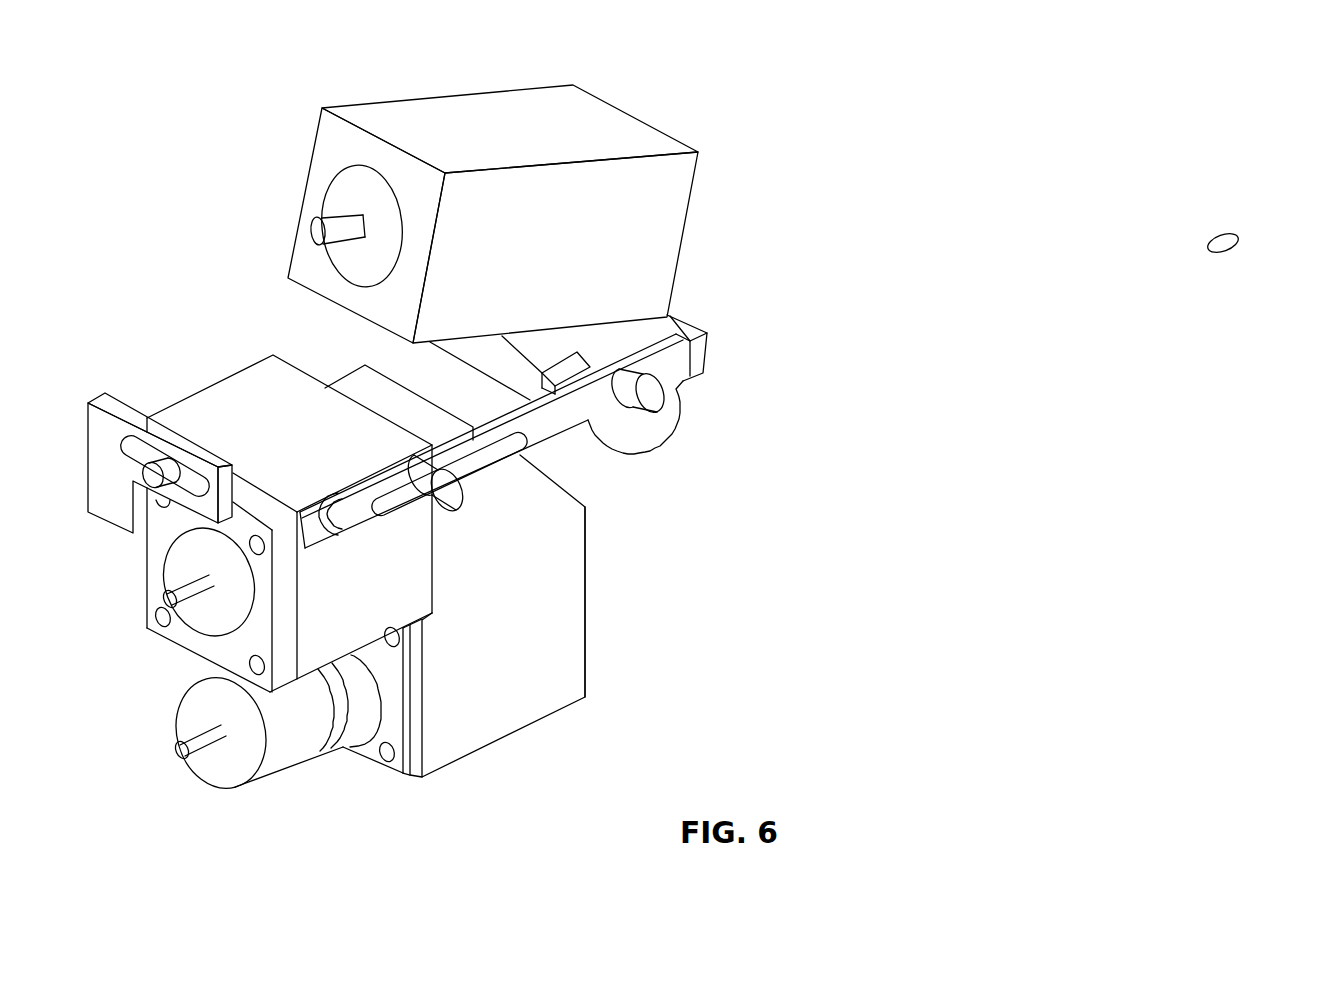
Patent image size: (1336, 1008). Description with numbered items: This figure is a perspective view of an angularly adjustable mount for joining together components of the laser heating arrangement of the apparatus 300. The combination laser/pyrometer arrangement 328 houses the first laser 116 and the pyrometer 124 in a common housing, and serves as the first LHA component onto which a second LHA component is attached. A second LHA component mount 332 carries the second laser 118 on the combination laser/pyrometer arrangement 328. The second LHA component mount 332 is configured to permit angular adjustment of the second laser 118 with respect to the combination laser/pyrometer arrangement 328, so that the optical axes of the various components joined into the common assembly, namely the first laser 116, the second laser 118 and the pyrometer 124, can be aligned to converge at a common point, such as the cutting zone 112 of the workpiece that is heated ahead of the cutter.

The apparatus 300 is at (975, 167).
The cutting zone 112 is at (1233, 238).
The second laser 118 is at (678, 180).
The second LHA component mount 332 is at (698, 357).
The pyrometer 124 is at (400, 565).
The combination laser/pyrometer arrangement 328 is at (573, 642).
The first laser 116 is at (523, 698).